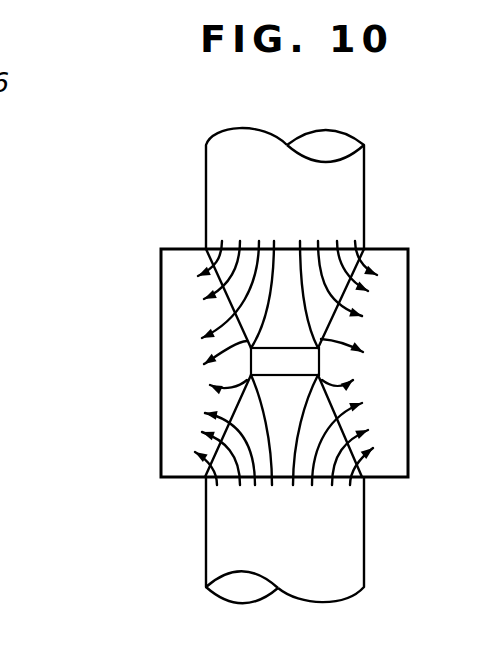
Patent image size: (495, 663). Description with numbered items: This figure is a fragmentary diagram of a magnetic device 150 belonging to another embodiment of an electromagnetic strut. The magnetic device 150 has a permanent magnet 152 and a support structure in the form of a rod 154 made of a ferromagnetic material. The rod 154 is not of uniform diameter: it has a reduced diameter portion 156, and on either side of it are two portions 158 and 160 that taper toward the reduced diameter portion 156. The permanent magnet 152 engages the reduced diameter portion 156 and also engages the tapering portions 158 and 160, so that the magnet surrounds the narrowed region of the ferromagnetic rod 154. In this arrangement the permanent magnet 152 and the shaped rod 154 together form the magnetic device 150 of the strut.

The magnetic device 150 is at (178, 242).
The permanent magnet 152 is at (393, 249).
The rod 154 is at (365, 175).
The reduced diameter portion 156 is at (303, 368).
The tapering portion 158 is at (323, 347).
The tapering portion 160 is at (243, 397).